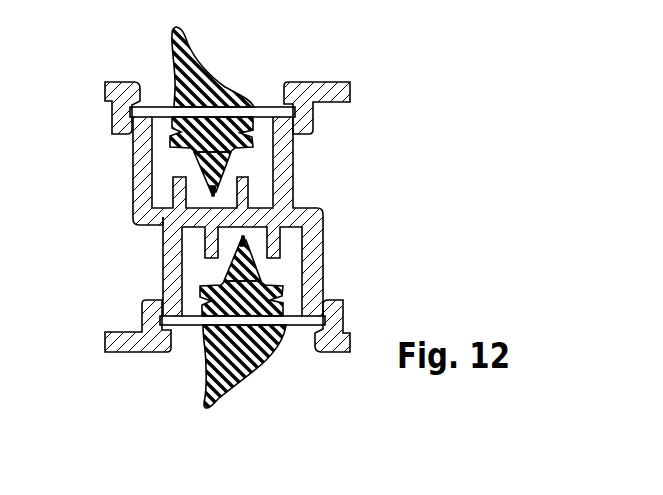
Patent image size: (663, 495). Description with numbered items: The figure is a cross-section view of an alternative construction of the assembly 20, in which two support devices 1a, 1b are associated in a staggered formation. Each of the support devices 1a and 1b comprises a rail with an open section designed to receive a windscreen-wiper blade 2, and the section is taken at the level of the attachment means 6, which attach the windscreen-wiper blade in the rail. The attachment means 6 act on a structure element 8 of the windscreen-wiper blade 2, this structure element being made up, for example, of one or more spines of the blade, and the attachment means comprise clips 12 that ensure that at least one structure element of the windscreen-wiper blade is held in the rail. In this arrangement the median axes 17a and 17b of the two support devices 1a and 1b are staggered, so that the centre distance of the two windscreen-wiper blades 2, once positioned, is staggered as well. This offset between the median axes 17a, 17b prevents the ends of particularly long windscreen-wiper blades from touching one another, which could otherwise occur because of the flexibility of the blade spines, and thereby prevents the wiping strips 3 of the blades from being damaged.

The support device 1a is at (298, 164).
The support device 1b is at (327, 285).
The windscreen-wiper blade 2 is at (199, 35).
The wiping strip 3 is at (200, 169).
The attachment means 6 is at (321, 113).
The structure element 8 is at (266, 106).
The clip 12 is at (292, 90).
The median axis 17a is at (212, 202).
The median axis 17b is at (243, 230).
The assembly 20 is at (260, 206).